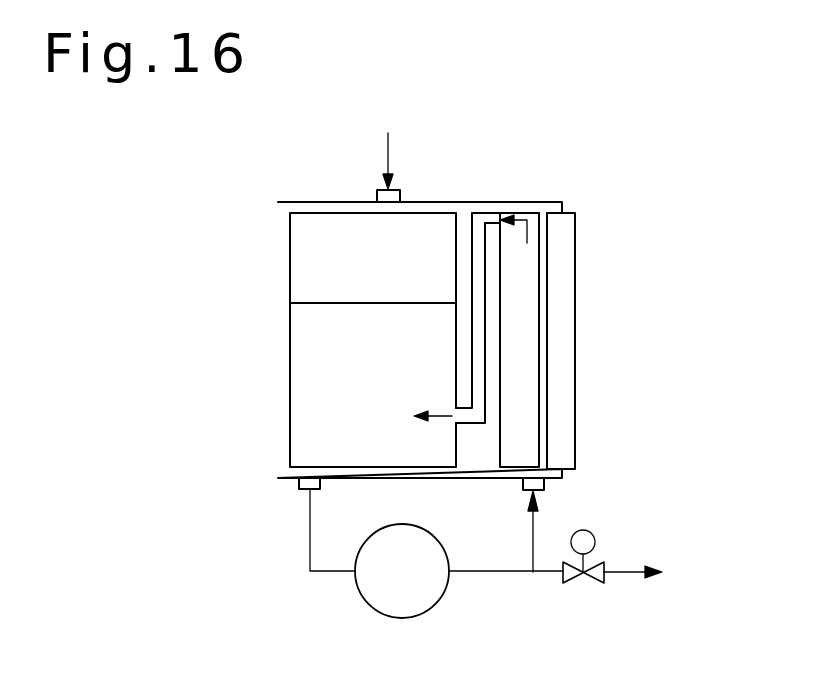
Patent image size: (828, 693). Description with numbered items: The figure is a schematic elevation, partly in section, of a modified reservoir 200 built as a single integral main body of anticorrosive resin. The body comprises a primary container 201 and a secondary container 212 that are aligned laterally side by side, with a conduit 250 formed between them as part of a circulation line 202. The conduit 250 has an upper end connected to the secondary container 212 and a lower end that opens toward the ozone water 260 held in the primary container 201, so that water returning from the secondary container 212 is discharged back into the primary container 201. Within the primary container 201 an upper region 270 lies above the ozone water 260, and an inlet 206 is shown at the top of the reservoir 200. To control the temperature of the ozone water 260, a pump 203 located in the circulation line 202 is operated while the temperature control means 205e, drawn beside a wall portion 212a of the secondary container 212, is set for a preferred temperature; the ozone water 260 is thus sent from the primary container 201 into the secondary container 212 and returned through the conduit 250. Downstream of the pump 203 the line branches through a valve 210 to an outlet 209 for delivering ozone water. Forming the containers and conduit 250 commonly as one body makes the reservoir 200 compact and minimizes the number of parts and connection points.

The reservoir 200 is at (262, 178).
The primary container 201 is at (284, 327).
The upper chamber 270 is at (297, 242).
The ozone water 260 is at (297, 432).
The ink inlet port 206 is at (402, 192).
The conduit 250 is at (482, 218).
The secondary container 212 is at (533, 300).
The filter membrane 212a is at (543, 357).
The temperature control means 205e is at (560, 393).
The circulation line 202 is at (323, 573).
The pump 203 is at (413, 605).
The valve 210 is at (573, 577).
The ink outlet 209 is at (637, 575).